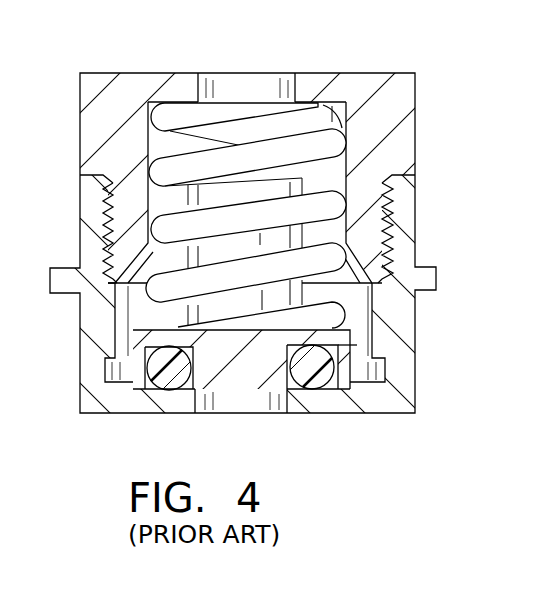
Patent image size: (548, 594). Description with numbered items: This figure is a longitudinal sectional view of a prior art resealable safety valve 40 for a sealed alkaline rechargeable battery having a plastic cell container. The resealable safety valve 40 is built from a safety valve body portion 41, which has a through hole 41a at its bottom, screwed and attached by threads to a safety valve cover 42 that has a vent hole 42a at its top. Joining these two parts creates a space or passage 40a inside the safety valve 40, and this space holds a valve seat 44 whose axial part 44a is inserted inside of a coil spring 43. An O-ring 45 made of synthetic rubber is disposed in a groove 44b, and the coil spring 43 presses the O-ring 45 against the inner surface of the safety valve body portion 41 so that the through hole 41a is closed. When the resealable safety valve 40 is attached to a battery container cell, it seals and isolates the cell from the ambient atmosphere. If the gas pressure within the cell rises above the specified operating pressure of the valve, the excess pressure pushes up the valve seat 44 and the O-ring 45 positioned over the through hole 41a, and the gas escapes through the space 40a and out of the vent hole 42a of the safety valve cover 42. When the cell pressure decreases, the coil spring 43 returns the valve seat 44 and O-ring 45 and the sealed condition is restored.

The resealable safety valve 40 is at (77, 163).
The space or passage 40a is at (103, 240).
The safety valve body portion 41 is at (93, 300).
The through hole 41a is at (232, 405).
The safety valve cover 42 is at (90, 93).
The vent hole 42a is at (230, 87).
The coil spring 43 is at (322, 142).
The valve seat 44 is at (258, 375).
The axial part 44a is at (296, 242).
The groove 44b is at (340, 347).
The O-ring 45 is at (162, 378).